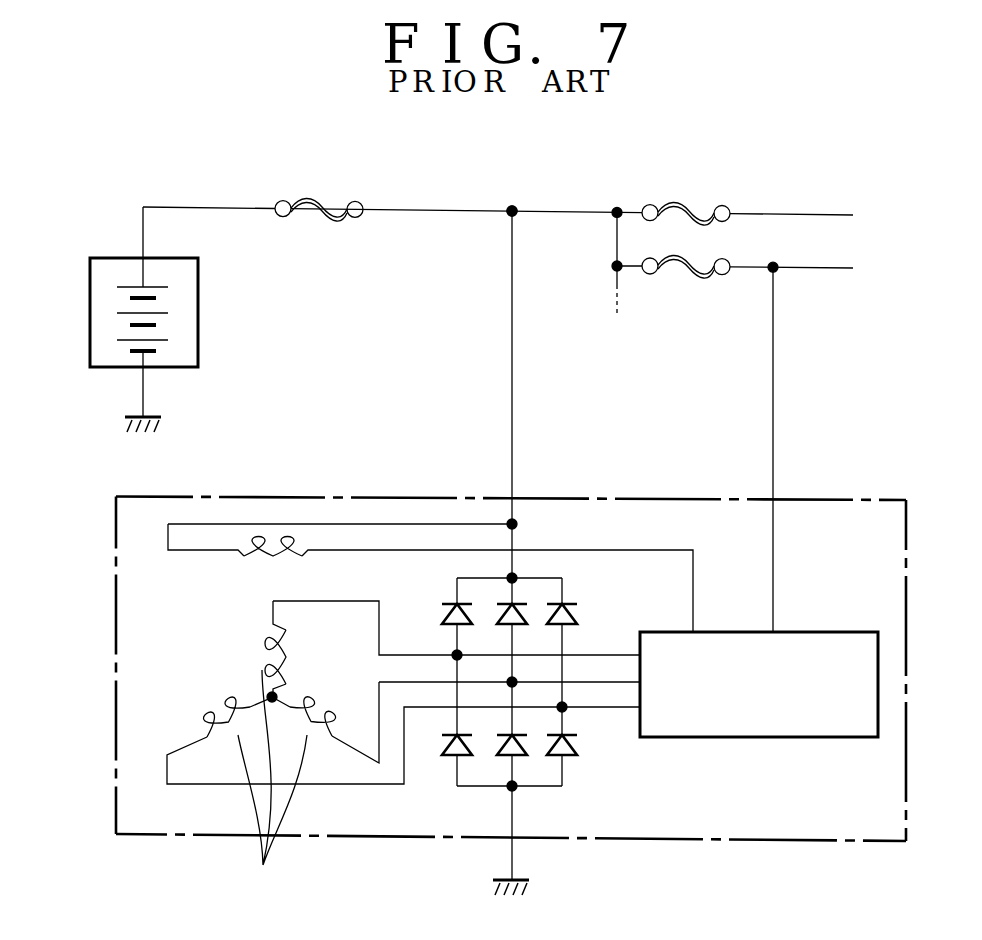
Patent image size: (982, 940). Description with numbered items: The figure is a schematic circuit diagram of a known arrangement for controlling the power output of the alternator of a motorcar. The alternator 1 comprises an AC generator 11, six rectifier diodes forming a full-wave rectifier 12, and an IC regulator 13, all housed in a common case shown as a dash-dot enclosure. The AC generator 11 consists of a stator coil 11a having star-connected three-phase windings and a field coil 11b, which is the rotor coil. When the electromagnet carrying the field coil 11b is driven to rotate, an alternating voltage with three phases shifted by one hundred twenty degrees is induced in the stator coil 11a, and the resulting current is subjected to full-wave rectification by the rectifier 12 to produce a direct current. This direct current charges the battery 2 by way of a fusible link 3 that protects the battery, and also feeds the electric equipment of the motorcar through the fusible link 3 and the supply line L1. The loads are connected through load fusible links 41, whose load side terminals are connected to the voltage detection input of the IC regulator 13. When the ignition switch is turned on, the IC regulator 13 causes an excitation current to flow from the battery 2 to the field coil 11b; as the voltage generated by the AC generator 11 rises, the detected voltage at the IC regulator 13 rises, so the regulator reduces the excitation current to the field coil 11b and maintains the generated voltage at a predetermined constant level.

The alternator 1 is at (116, 525).
The battery 2 is at (120, 258).
The fusible link 3 is at (320, 200).
The supply line L1 is at (460, 210).
The load FLs 41 is at (700, 258).
The AC generator 11 is at (228, 637).
The stator coil 11a is at (272, 786).
The field coil 11b is at (275, 533).
The rectifier 12 is at (618, 604).
The IC regulator 13 is at (800, 632).